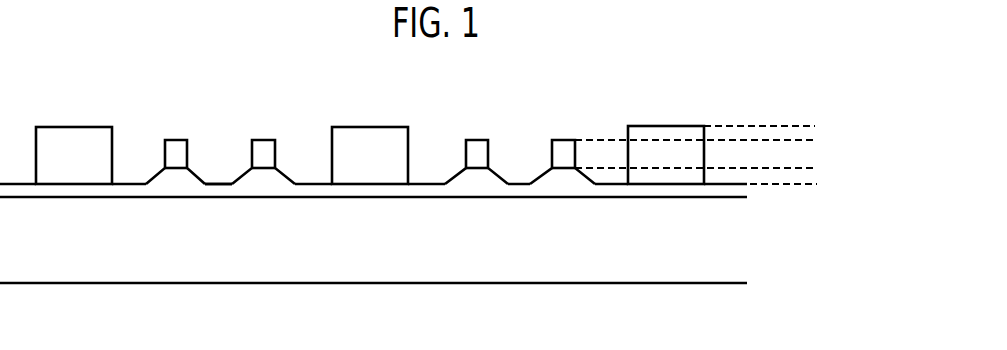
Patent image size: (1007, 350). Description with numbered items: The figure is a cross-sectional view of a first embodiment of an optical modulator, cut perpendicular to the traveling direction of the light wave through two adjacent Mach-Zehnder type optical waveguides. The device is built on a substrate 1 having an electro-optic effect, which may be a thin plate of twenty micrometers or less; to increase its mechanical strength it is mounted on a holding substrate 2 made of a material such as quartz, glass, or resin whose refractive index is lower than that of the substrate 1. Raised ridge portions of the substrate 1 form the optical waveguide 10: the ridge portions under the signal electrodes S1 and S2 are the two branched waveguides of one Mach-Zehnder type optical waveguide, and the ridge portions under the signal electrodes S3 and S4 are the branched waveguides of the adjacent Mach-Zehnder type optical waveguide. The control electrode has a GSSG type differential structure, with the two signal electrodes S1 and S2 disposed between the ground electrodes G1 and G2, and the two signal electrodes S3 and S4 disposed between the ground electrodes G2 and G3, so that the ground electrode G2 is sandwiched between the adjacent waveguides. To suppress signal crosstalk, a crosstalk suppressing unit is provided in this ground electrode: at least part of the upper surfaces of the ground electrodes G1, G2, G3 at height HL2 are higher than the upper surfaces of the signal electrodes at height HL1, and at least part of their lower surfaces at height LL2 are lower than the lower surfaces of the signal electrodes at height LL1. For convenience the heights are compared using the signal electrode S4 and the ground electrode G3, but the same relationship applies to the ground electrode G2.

The substrate 1 is at (93, 191).
The holding substrate 2 is at (317, 256).
The optical waveguide 10 is at (206, 176).
The ground electrode G1 is at (74, 134).
The ground electrode G2 is at (370, 134).
The ground electrode G3 is at (666, 134).
The signal electrode S1 is at (175, 142).
The signal electrode S2 is at (263, 142).
The signal electrode S3 is at (476, 142).
The signal electrode S4 is at (562, 142).
The height of upper surfaces of signal electrodes HL1 is at (794, 142).
The height of upper surfaces of ground electrodes HL2 is at (800, 125).
The height of lower surfaces of signal electrodes LL1 is at (794, 166).
The height of lower surfaces of ground electrodes LL2 is at (803, 185).